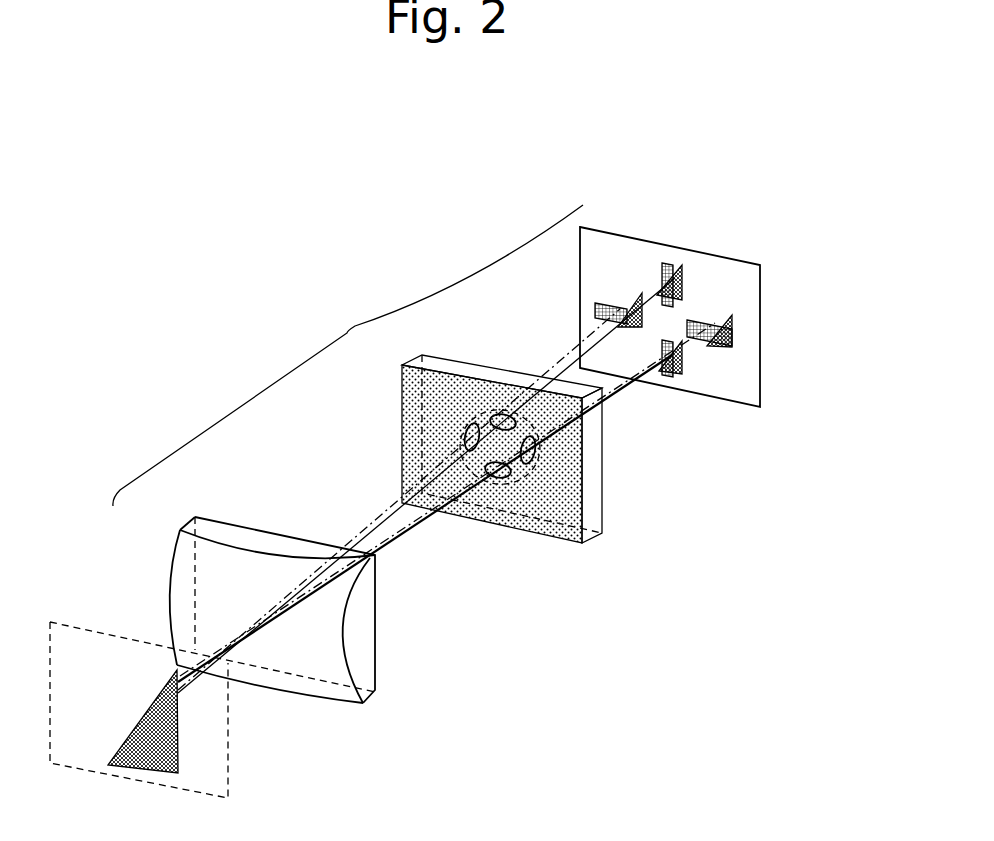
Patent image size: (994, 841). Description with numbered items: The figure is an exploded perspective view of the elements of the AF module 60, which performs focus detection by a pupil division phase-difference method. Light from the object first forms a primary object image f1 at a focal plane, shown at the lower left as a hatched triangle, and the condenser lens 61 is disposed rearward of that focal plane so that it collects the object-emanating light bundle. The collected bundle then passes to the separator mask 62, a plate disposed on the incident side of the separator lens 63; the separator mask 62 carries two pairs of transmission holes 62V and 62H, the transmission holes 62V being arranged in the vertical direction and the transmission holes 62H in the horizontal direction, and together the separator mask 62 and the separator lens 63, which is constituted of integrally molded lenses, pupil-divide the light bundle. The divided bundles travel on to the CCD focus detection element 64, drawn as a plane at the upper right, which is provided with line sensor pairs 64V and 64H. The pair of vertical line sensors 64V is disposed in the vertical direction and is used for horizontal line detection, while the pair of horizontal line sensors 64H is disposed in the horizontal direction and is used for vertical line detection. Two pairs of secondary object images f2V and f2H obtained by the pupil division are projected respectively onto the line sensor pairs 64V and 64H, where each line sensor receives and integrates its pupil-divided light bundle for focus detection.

The AF module 60 is at (348, 355).
The condenser lens 61 is at (360, 645).
The separator mask 62 is at (562, 547).
The transmission holes 62V is at (507, 415).
The transmission holes 62H is at (622, 457).
The separator lens 63 is at (598, 510).
The CCD focus detection element 64 is at (757, 395).
The vertical line sensors 64V is at (666, 263).
The horizontal line sensors 64H is at (596, 305).
The object image f1 is at (180, 743).
The object images f2V is at (678, 268).
The object images f2H is at (640, 294).